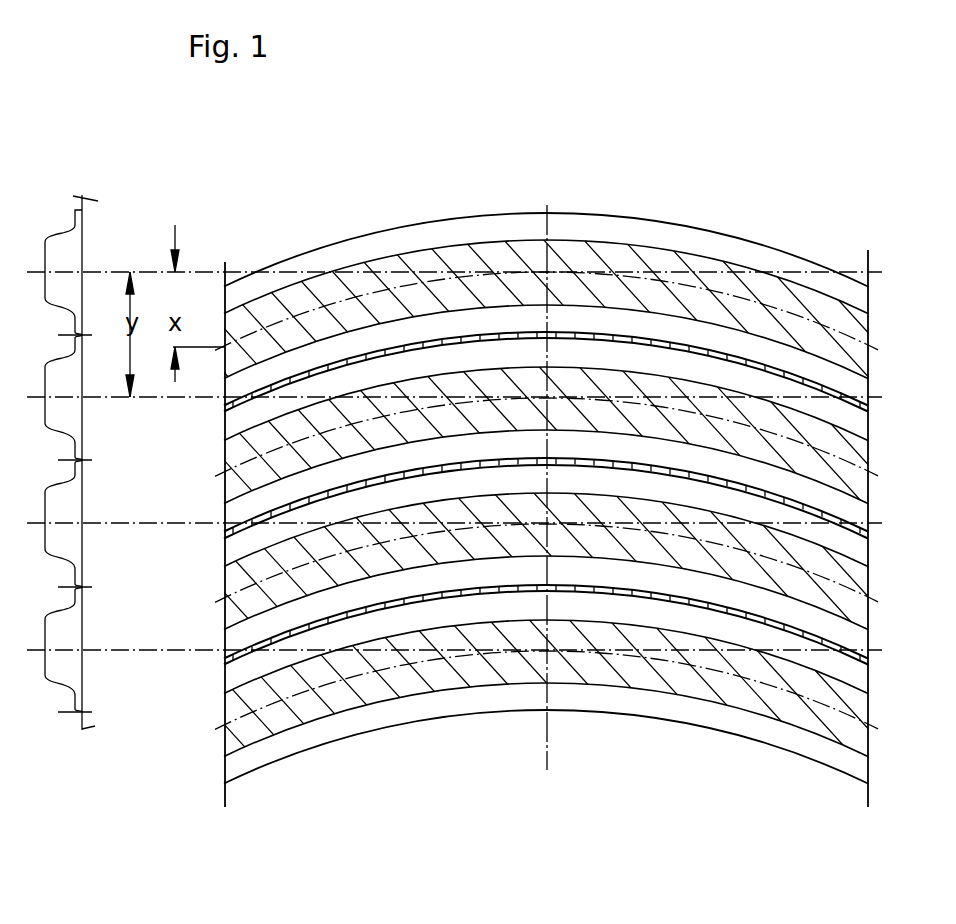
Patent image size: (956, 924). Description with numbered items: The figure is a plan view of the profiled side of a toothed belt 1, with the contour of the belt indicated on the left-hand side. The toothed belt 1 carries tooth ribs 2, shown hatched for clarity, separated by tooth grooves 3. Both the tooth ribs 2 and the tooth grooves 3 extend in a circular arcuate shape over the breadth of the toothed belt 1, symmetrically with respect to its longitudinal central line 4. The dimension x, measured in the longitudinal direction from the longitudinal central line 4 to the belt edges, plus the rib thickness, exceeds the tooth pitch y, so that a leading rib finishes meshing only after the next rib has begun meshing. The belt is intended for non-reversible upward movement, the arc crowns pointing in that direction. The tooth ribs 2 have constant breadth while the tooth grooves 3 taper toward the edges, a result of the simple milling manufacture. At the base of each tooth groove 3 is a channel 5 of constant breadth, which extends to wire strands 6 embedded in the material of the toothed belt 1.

The toothed belt 1 is at (420, 778).
The tooth ribs 2 is at (45, 670).
The tooth grooves 3 is at (651, 322).
The longitudinal central line 4 is at (548, 749).
The channel 5 is at (87, 458).
The wire strands 6 is at (85, 548).